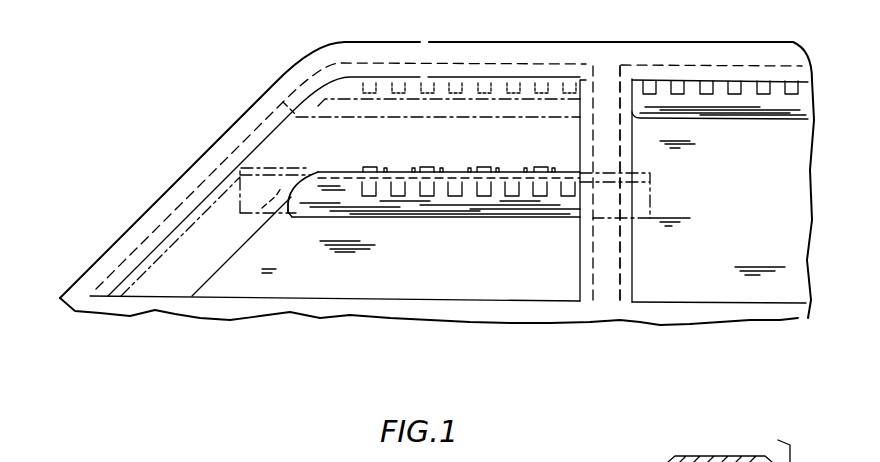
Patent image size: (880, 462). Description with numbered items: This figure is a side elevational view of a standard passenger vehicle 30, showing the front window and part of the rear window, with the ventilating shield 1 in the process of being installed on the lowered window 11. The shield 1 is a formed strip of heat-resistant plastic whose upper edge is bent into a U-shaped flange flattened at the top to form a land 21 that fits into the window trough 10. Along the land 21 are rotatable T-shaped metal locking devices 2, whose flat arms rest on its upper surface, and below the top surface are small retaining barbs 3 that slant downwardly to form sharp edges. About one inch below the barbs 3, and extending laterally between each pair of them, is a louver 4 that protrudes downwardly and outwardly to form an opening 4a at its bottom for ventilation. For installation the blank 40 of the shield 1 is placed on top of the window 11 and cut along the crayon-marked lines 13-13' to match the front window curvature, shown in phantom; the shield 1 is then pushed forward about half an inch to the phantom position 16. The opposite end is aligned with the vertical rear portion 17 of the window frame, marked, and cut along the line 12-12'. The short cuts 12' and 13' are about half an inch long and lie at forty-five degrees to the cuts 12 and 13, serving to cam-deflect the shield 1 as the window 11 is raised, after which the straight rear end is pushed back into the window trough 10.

The ventilating shield 1 is at (377, 218).
The T-shaped metal locking device 2 is at (537, 172).
The retaining barb 3 is at (493, 172).
The louver 4 is at (452, 158).
The opening 4a is at (478, 197).
The window trough 10 is at (470, 65).
The window 11 is at (245, 240).
The rear cut line 12 is at (625, 225).
The rear angled cut 12' is at (616, 210).
The front cut line 13 is at (255, 174).
The front angled cut 13' is at (274, 242).
The forward position 16 is at (272, 197).
The vertical rear portion of window frame 17 is at (632, 117).
The land 21 is at (397, 172).
The passenger vehicle 30 is at (138, 222).
The blank 40 is at (242, 193).